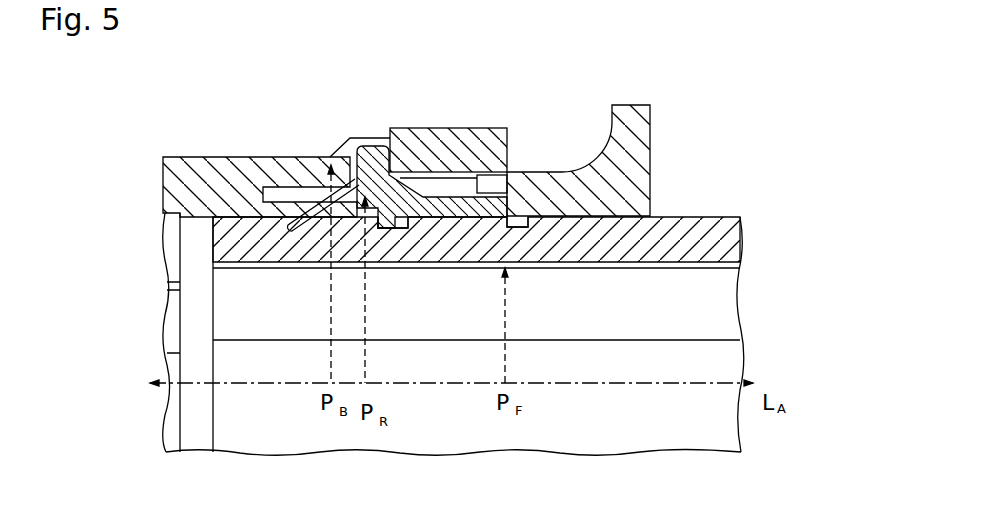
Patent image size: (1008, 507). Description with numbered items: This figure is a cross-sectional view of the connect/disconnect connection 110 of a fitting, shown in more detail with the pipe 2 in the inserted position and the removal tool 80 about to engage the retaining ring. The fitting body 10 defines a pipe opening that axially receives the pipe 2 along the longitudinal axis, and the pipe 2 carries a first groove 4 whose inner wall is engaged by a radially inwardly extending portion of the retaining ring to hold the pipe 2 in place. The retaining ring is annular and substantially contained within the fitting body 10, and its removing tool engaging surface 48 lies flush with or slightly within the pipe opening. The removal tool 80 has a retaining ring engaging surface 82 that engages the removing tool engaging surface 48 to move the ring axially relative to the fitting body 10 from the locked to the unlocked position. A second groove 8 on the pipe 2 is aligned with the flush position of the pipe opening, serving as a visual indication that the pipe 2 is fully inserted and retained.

The pipe 2 is at (750, 243).
The groove 4 is at (398, 240).
The second groove 8 is at (540, 236).
The fitting body 10 is at (243, 150).
The removing tool engaging surface 48 is at (385, 138).
The removal tool 80 is at (657, 177).
The retaining ring engaging surface 82 is at (516, 180).
The connection 110 is at (427, 95).